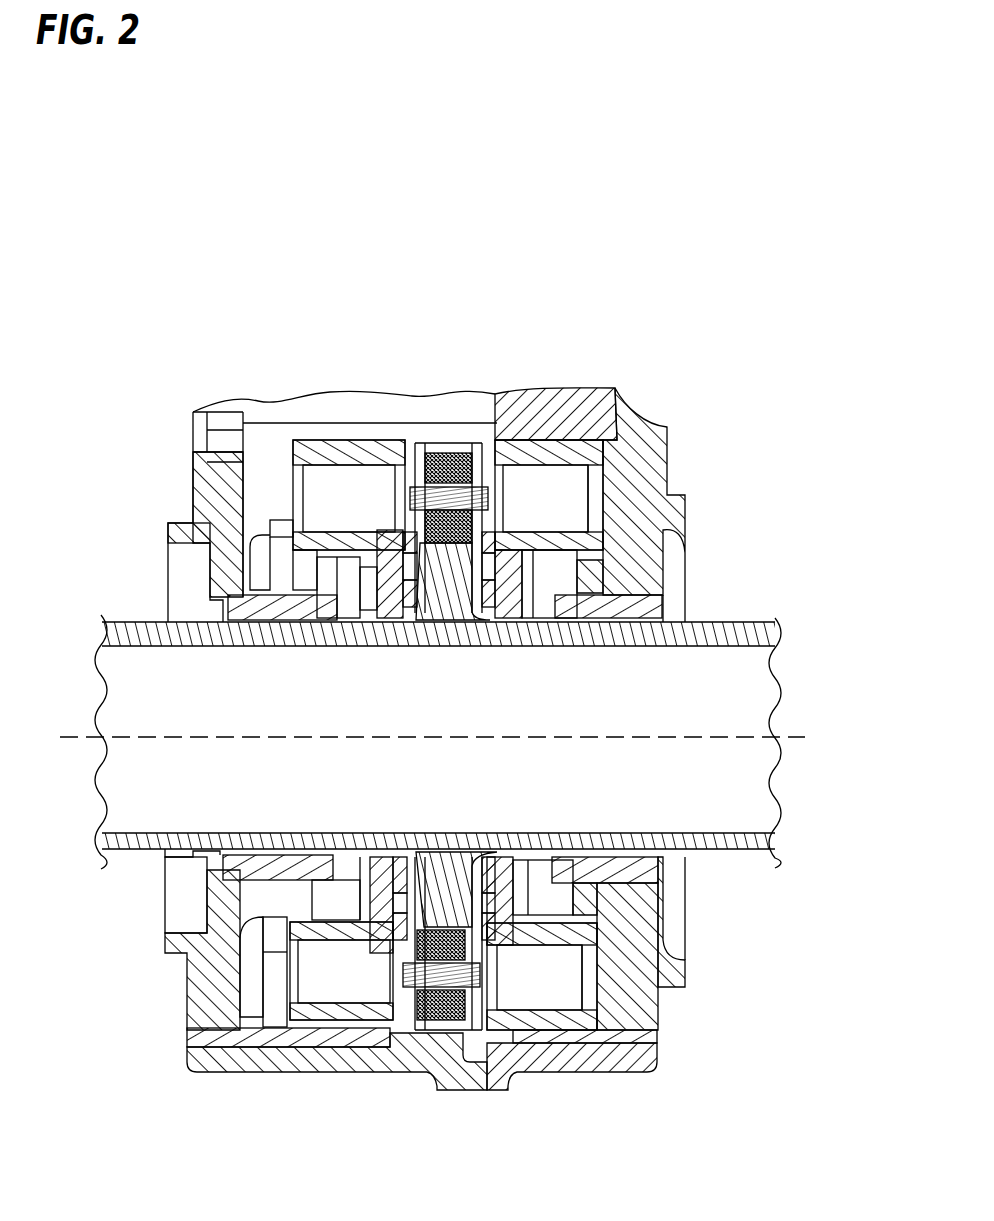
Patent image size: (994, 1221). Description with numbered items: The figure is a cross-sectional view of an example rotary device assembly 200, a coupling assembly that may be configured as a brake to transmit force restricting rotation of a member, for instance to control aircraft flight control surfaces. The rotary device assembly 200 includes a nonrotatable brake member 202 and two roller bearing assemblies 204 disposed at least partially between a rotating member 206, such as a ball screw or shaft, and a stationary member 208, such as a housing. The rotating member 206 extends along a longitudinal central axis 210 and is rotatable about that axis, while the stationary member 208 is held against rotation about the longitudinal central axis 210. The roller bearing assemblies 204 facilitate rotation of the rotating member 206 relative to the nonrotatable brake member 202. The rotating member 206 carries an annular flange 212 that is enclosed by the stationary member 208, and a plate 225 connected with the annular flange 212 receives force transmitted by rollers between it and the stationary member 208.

The rotary device assembly 200 is at (132, 458).
The nonrotatable brake member 202 is at (535, 547).
The roller bearing assemblies 204 is at (410, 528).
The rotating member 206 is at (715, 630).
The stationary member 208 is at (573, 392).
The longitudinal central axis 210 is at (698, 735).
The annular flange 212 is at (436, 557).
The plate 225 is at (483, 487).